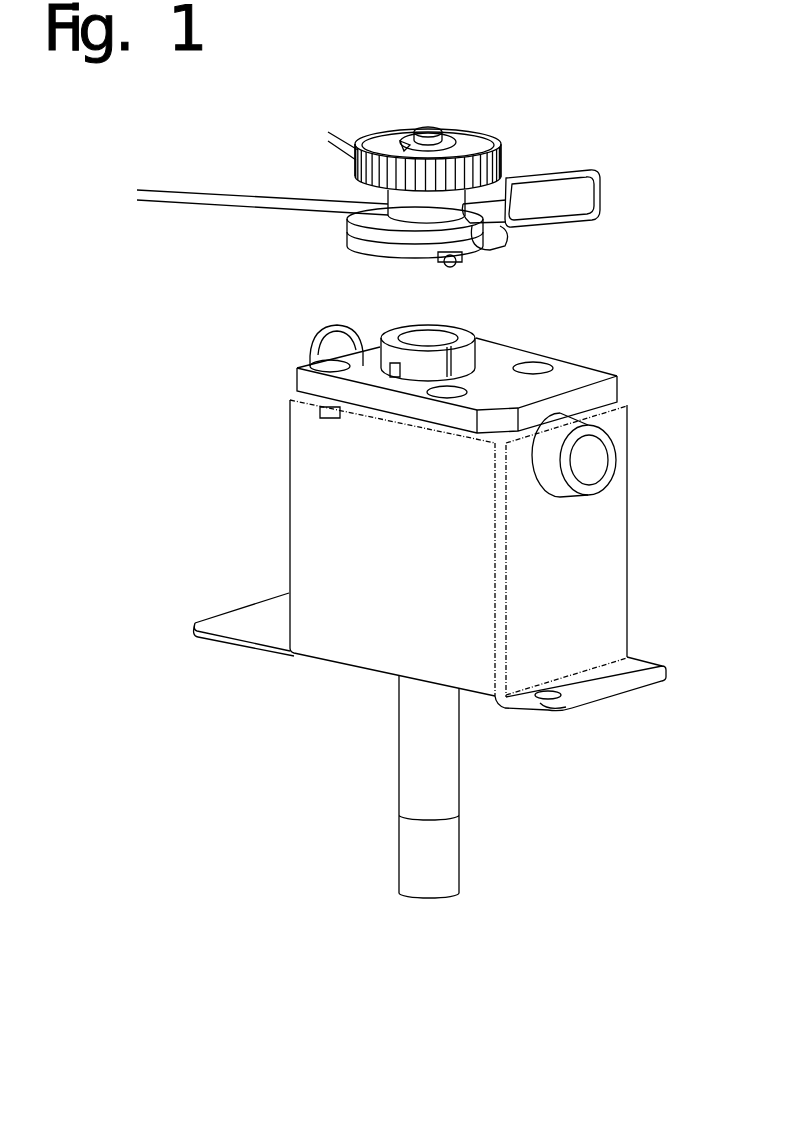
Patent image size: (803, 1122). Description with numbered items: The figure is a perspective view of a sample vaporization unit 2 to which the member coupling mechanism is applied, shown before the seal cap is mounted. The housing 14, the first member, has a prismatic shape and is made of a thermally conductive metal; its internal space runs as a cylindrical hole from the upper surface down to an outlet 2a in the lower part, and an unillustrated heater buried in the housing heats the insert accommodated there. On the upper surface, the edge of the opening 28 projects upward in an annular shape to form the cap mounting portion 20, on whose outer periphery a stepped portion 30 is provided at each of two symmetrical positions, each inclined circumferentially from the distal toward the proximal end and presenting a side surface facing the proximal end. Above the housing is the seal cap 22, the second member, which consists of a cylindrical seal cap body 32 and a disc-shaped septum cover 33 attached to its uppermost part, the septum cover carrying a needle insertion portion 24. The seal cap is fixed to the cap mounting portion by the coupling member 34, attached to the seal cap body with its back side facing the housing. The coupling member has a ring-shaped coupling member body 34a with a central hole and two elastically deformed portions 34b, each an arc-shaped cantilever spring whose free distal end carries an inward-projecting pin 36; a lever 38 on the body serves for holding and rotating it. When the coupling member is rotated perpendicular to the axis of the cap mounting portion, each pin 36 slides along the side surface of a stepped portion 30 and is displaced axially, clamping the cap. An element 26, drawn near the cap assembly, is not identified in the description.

The sample vaporization unit 2 is at (198, 304).
The outlet 2a is at (428, 897).
The housing 14 is at (612, 530).
The cap mounting portion 20 is at (462, 353).
The seal cap 22 is at (299, 139).
The needle insertion portion 24 is at (426, 127).
The rod 26 is at (229, 202).
The opening 28 is at (423, 338).
The stepped portion 30 is at (383, 372).
The seal cap body 32 is at (412, 208).
The septum cover 33 is at (478, 143).
The coupling member 34 is at (265, 222).
The coupling member body 34a is at (350, 222).
The elastically deformed portion 34b is at (350, 245).
The pin 36 is at (459, 263).
The lever 38 is at (578, 200).